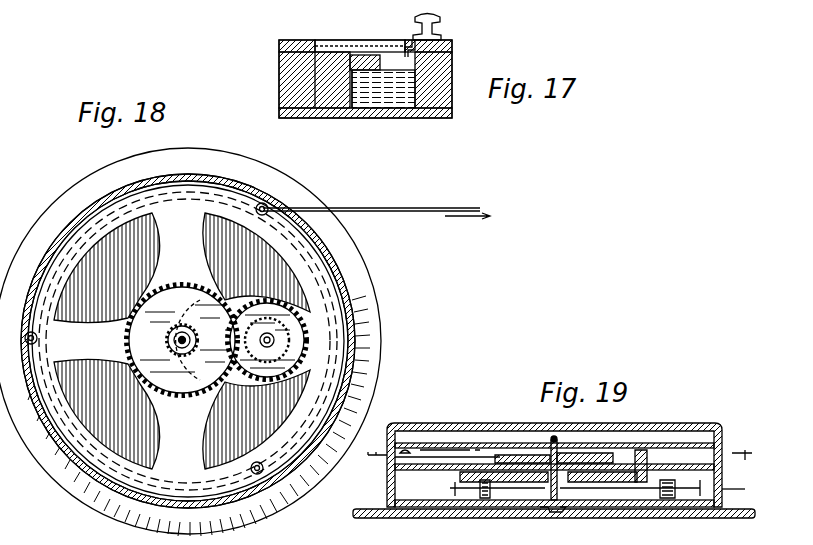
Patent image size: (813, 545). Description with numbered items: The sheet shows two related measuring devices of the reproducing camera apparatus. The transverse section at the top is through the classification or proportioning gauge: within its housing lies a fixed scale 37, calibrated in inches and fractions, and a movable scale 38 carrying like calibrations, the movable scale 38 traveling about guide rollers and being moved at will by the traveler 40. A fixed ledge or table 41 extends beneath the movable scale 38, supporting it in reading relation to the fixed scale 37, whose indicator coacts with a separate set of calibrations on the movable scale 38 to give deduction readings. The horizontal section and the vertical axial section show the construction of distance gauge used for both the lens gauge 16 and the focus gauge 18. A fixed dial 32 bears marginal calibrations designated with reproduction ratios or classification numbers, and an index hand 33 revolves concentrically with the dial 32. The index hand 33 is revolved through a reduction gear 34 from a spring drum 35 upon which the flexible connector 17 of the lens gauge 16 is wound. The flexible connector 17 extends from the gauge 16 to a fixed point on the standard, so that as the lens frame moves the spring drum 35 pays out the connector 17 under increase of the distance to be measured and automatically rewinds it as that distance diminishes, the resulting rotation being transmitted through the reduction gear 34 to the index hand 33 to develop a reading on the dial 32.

In FIG. 18, the distance gauge 16 is at (335, 272).
In FIG. 19, the distance gauge 16 is at (395, 430).
In FIG. 18, the flexible connector 17 is at (257, 329).
In FIG. 19, the flexible connector 17 is at (744, 477).
In FIG. 19, the gauge 18 is at (555, 455).
In FIG. 19, the fixed dial 32 is at (507, 448).
In FIG. 19, the index hand 33 is at (615, 440).
In FIG. 18, the reduction gear 34 is at (217, 332).
In FIG. 19, the reduction gear 34 is at (548, 450).
In FIG. 18, the spring drum 35 is at (240, 456).
In FIG. 19, the spring drum 35 is at (392, 500).
In FIG. 17, the fixed scale 37 is at (330, 50).
In FIG. 17, the movable scale 38 is at (370, 55).
In FIG. 17, the traveler 40 is at (440, 37).
In FIG. 17, the fixed ledge or table 41 is at (383, 89).